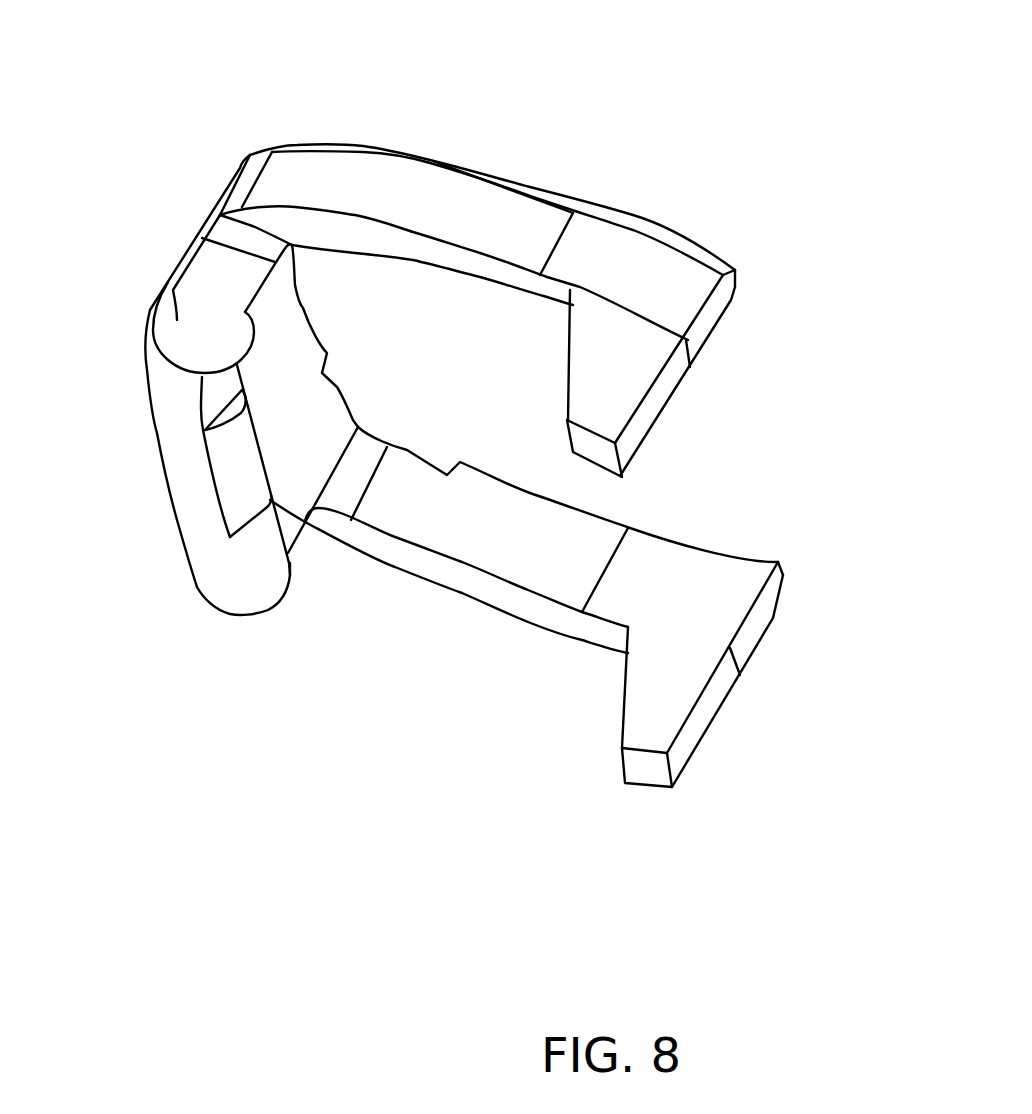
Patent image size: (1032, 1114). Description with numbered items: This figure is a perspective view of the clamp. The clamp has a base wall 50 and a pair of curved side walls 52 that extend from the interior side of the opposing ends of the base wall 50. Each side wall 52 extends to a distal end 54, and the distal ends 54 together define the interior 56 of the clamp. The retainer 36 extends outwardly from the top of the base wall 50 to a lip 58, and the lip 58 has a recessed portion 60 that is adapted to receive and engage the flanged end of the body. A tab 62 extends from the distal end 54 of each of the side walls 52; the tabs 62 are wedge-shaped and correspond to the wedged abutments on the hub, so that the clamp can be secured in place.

The retainer 36 is at (177, 320).
The base wall 50 is at (293, 398).
The side walls 52 is at (473, 210).
The distal ends 54 is at (727, 318).
The interior 56 is at (573, 472).
The lip 58 is at (164, 477).
The recessed portion 60 is at (237, 482).
The tab 62 is at (657, 418).